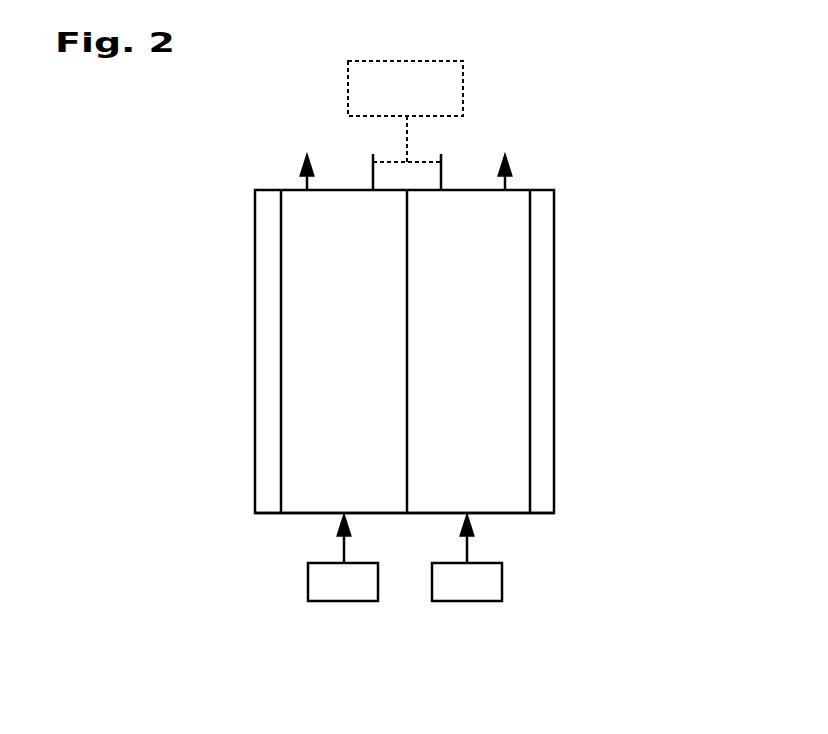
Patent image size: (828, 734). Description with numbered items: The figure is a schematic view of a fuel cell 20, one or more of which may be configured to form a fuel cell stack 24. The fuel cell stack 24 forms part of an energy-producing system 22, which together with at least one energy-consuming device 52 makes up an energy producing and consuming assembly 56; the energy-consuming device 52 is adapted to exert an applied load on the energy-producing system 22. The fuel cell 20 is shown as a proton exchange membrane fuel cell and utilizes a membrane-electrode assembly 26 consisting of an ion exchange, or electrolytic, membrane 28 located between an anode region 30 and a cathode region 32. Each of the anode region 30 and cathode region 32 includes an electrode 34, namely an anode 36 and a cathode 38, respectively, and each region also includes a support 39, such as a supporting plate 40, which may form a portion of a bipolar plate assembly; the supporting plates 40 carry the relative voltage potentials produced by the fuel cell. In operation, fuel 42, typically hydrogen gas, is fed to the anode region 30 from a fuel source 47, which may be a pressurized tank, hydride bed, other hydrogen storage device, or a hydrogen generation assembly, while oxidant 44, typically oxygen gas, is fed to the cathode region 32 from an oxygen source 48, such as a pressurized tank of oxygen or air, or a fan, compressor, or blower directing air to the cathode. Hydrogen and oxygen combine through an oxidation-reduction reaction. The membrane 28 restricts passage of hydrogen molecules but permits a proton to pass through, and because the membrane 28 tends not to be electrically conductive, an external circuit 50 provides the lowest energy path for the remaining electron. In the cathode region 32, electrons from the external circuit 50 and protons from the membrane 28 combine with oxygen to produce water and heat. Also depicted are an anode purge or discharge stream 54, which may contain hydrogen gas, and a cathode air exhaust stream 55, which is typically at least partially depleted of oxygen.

The fuel cell 20 is at (207, 272).
The energy-producing system 22 is at (230, 120).
The fuel cell stack 24 is at (195, 240).
The membrane-electrode assembly 26 is at (407, 518).
The ion exchange membrane 28 is at (407, 312).
The anode region 30 is at (279, 407).
The cathode region 32 is at (533, 430).
The electrode 34 is at (352, 487).
The anode 36 is at (303, 490).
The cathode 38 is at (473, 490).
The support 39 is at (255, 285).
The supporting plate 40 is at (255, 340).
The fuel 42 is at (343, 552).
The oxidant 44 is at (467, 552).
The fuel source 47 is at (345, 602).
The oxygen source 48 is at (468, 602).
The external circuit 50 is at (394, 160).
The energy-consuming device 52 is at (463, 88).
The anode purge or discharge stream 54 is at (300, 183).
The cathode air exhaust stream 55 is at (512, 183).
The energy producing and consuming assembly 56 is at (137, 177).